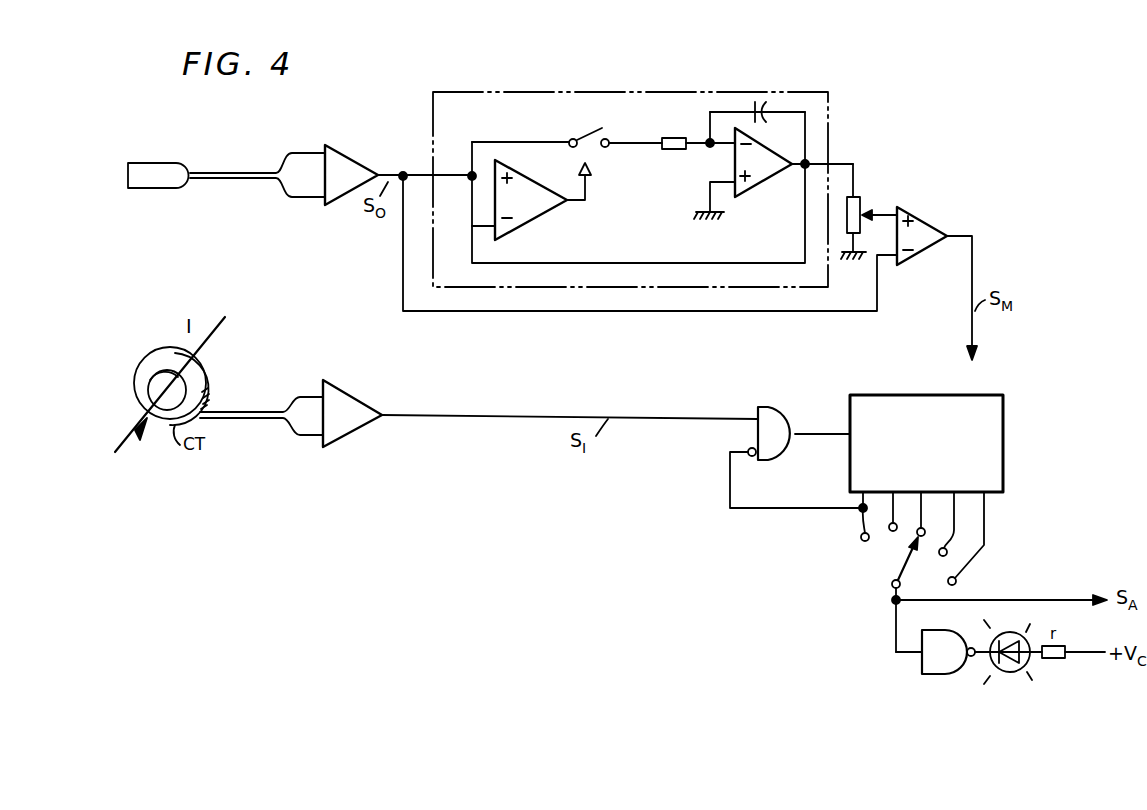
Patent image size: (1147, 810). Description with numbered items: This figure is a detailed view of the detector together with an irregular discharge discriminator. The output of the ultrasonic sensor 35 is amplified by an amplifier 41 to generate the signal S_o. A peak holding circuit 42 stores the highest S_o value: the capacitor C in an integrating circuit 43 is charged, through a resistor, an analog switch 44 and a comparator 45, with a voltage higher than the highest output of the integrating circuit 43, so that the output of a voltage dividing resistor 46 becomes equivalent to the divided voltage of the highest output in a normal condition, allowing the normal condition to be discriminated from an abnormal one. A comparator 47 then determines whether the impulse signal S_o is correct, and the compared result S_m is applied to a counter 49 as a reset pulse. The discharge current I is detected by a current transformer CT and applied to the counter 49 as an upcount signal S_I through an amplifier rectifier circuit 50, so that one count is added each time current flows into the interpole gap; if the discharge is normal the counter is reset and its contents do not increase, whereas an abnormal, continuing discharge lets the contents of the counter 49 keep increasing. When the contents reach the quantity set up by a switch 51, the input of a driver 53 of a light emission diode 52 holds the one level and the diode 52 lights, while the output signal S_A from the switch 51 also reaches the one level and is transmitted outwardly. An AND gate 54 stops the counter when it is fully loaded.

The ultrasonic sensor 35 is at (153, 190).
The amplifier 41 is at (345, 157).
The peak holding circuit 42 is at (832, 112).
The integrating circuit 43 is at (750, 186).
The analog switch 44 is at (596, 128).
The comparator 45 is at (532, 222).
The voltage dividing resistor 46 is at (863, 198).
The comparator 47 is at (924, 214).
The counter 49 is at (881, 394).
The amplifier rectifier circuit 50 is at (361, 398).
The switch 51 is at (905, 559).
The light emission diode 52 is at (1000, 680).
The driver 53 is at (950, 679).
The AND gate 54 is at (785, 419).